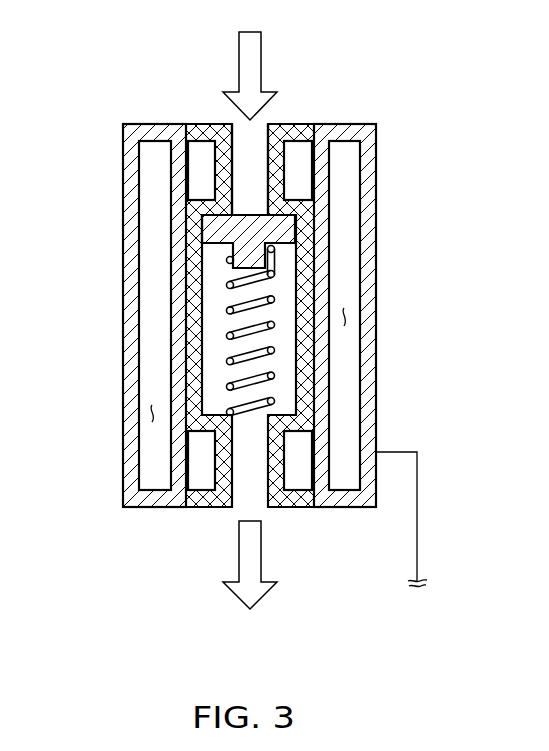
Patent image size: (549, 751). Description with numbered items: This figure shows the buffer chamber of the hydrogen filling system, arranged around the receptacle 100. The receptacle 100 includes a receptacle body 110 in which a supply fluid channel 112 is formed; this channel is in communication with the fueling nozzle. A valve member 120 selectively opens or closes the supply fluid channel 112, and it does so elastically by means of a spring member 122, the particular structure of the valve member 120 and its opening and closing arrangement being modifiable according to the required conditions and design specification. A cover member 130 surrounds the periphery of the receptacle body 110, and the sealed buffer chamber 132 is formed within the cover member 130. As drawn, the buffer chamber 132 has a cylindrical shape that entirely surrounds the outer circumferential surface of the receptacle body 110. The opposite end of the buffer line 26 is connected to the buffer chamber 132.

The receptacle 100 is at (244, 320).
The receptacle body 110 is at (281, 176).
The supply fluid channel 112 is at (266, 170).
The valve member 120 is at (280, 228).
The spring member 122 is at (230, 323).
The cover member 130 is at (372, 413).
The buffer chamber 132 is at (140, 413).
The buffer line 26 is at (417, 512).